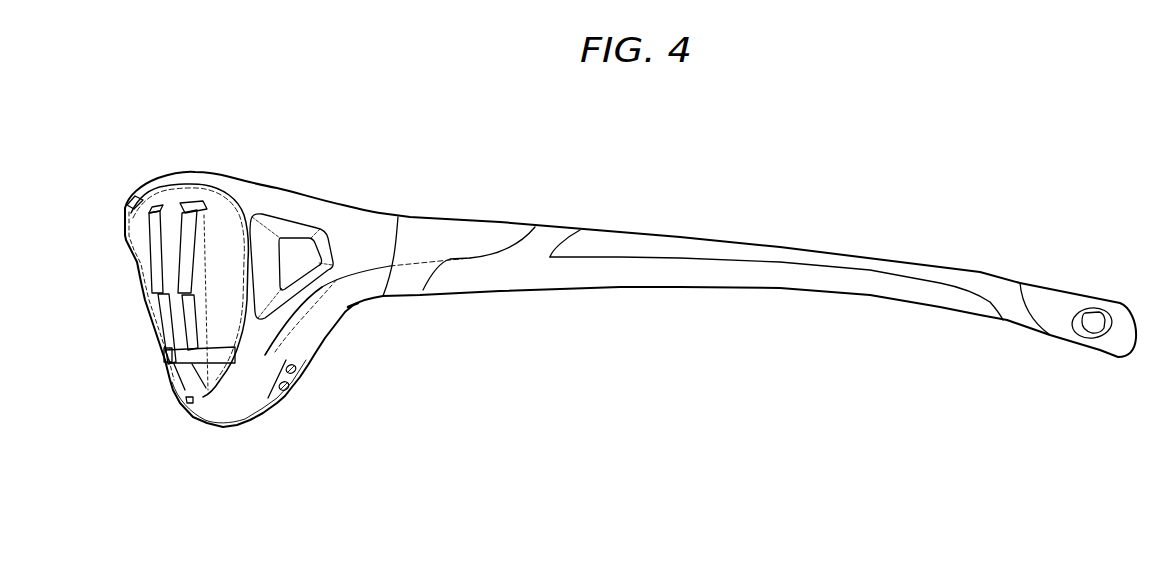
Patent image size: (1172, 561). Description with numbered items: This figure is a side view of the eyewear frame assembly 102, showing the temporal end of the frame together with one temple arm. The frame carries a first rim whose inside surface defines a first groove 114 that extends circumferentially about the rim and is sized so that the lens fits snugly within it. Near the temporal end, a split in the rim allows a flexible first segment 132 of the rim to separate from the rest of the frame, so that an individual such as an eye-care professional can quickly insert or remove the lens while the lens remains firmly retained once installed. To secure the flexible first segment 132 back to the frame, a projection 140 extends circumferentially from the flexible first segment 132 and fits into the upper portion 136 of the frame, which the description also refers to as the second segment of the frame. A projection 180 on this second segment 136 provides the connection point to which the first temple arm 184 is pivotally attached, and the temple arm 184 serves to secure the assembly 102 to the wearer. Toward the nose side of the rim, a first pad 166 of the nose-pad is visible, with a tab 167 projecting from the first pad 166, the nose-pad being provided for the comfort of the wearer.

The eyewear frame assembly 102 is at (878, 139).
The first groove 114 is at (168, 233).
The flexible first segment 132 is at (247, 418).
The upper portion of the frame 136 is at (318, 331).
The projection 140 is at (294, 376).
The first pad 166 is at (207, 250).
The tab 167 is at (170, 355).
The projection of the second segment 180 is at (359, 232).
The first temple arm 184 is at (573, 278).